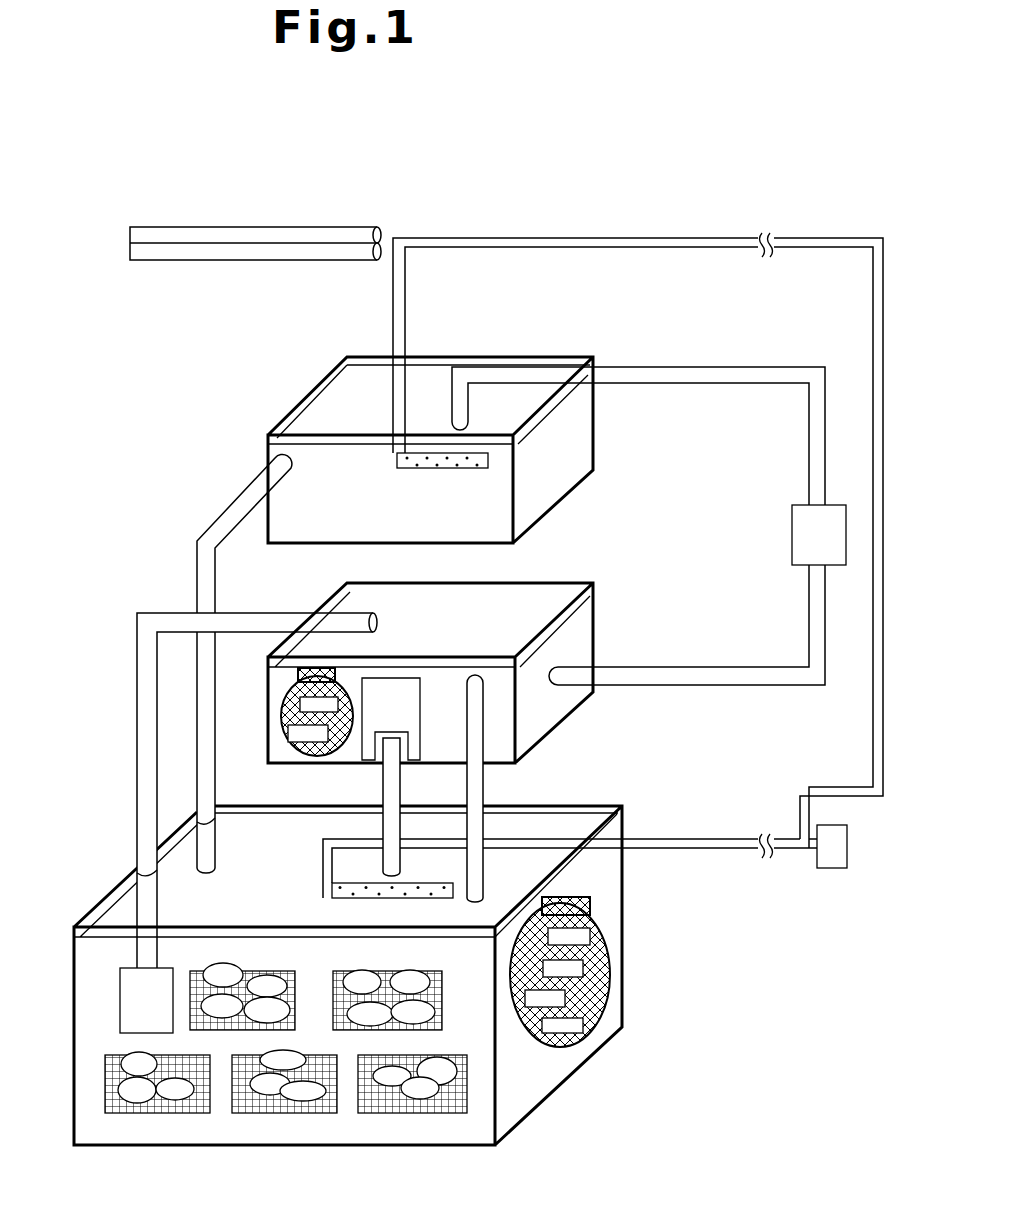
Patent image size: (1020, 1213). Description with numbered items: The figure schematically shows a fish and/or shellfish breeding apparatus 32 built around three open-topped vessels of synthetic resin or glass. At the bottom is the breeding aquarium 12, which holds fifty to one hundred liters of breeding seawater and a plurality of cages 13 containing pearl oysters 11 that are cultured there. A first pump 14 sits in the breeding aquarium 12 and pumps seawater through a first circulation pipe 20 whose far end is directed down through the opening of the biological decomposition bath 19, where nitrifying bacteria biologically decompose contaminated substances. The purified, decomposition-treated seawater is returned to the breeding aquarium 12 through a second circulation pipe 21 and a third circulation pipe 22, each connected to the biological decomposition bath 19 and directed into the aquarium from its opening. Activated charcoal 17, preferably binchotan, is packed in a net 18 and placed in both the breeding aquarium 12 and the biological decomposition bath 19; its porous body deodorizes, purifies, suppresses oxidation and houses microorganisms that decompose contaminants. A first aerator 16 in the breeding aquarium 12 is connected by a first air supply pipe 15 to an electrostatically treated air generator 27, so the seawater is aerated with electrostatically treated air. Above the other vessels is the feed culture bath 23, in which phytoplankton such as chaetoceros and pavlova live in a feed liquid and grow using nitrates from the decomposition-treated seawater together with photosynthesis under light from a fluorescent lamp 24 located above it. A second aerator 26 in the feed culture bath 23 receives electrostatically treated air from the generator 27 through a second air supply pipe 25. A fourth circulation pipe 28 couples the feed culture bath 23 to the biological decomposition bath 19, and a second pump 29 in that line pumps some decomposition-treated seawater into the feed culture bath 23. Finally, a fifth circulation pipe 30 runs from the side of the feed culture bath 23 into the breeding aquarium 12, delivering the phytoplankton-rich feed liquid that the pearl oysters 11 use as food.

The pearl oysters 11 is at (176, 1092).
The breeding aquarium 12 is at (623, 998).
The cages 13 is at (108, 1115).
The first pump 14 is at (122, 1014).
The first air supply pipe 15 is at (688, 849).
The first aerator 16 is at (323, 905).
The activated charcoal 17 is at (293, 742).
The net 18 is at (614, 1025).
The biological decomposition bath 19 is at (562, 705).
The first circulation pipe 20 is at (137, 760).
The second circulation pipe 21 is at (383, 782).
The third circulation pipe 22 is at (485, 783).
The feed culture bath 23 is at (588, 450).
The fluorescent lamp 24 is at (300, 228).
The second air supply pipe 25 is at (542, 240).
The second aerator 26 is at (448, 470).
The electrostatically treated air generator 27 is at (835, 899).
The fourth circulation pipe 28 is at (713, 688).
The second pump 29 is at (792, 546).
The fifth circulation pipe 30 is at (228, 506).
The fish and/or shellfish breeding apparatus 32 is at (775, 150).